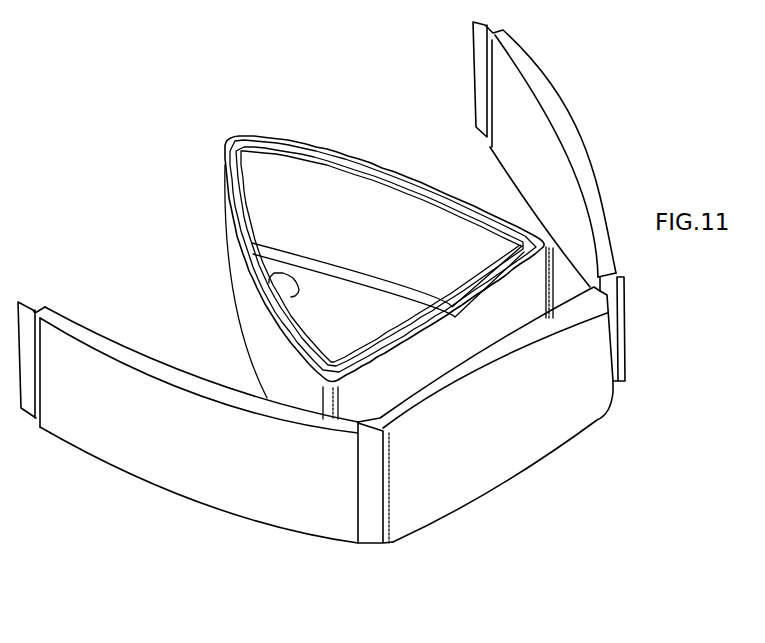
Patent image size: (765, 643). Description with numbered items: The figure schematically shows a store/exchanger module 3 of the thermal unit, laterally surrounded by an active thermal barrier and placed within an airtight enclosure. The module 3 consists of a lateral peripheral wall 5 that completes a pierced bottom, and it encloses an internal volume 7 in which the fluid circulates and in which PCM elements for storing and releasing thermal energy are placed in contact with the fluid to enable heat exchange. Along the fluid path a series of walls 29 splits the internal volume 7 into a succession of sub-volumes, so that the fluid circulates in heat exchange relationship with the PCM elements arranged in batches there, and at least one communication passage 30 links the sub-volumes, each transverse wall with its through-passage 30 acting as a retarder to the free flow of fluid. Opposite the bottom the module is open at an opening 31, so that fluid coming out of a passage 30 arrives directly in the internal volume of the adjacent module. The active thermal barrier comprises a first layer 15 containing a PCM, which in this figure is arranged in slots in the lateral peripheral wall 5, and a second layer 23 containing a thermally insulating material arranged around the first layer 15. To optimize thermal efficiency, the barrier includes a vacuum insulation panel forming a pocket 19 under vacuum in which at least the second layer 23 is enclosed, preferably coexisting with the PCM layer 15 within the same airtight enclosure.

The module 3 is at (298, 177).
The lateral peripheral wall 5 is at (267, 180).
The internal volume 7 is at (388, 287).
The first layer 15 is at (337, 157).
The pocket under vacuum 19 is at (593, 157).
The second layer 23 is at (523, 60).
The walls 29 is at (328, 322).
The communication passage 30 is at (278, 280).
The opening 31 is at (398, 200).